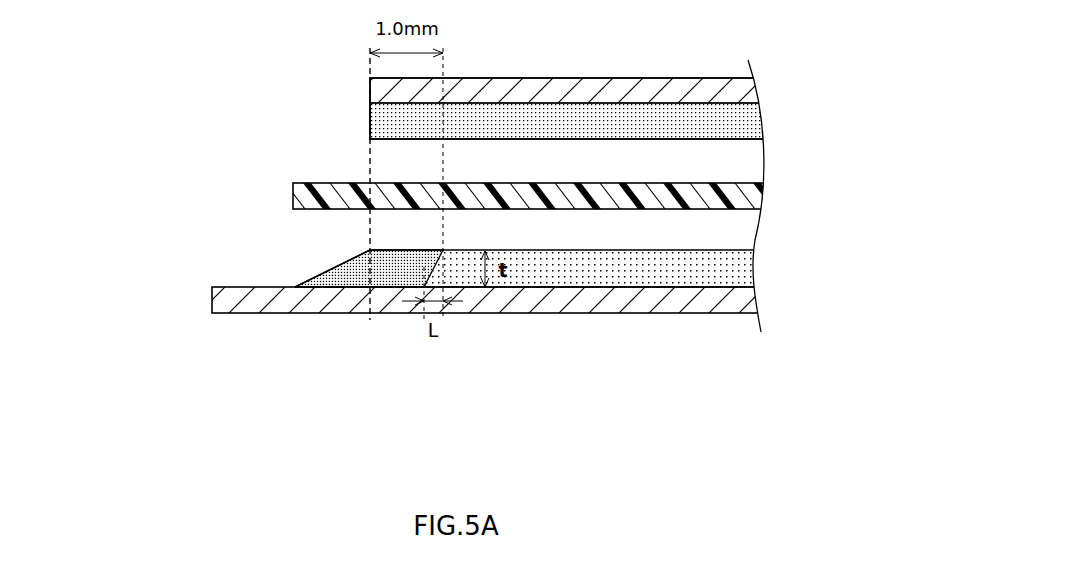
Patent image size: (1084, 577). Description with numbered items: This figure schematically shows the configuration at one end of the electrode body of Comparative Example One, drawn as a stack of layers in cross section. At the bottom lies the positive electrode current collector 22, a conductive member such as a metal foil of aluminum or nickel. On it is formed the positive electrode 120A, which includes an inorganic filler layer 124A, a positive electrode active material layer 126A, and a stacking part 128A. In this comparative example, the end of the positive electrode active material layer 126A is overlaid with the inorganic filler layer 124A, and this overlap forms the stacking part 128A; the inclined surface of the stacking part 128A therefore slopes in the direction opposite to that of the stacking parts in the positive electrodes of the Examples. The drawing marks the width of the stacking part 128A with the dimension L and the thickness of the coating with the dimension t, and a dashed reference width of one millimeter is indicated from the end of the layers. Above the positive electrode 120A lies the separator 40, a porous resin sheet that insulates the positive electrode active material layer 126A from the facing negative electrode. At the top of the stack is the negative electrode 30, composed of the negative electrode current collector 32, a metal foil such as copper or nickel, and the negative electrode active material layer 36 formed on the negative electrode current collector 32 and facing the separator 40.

The negative electrode 30 is at (529, 84).
The negative electrode current collector 32 is at (611, 83).
The negative electrode active material layer 36 is at (652, 113).
The separator 40 is at (292, 196).
The positive electrode 120A is at (452, 218).
The inorganic filler layer 124A is at (334, 283).
The positive electrode active material layer 126A is at (692, 273).
The stacking part 128A is at (420, 352).
The positive electrode current collector 22 is at (628, 300).